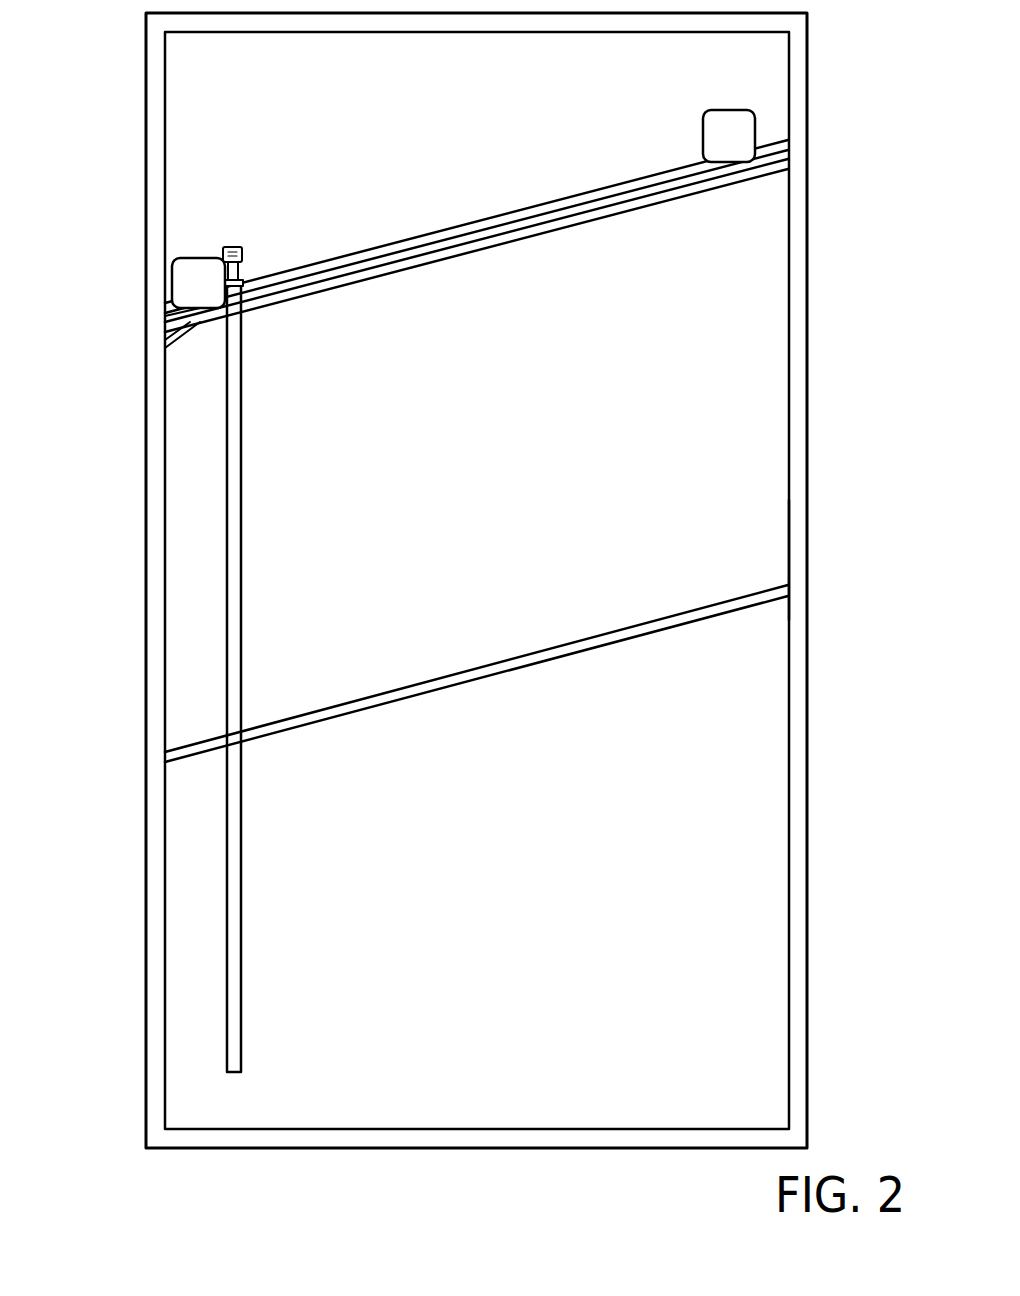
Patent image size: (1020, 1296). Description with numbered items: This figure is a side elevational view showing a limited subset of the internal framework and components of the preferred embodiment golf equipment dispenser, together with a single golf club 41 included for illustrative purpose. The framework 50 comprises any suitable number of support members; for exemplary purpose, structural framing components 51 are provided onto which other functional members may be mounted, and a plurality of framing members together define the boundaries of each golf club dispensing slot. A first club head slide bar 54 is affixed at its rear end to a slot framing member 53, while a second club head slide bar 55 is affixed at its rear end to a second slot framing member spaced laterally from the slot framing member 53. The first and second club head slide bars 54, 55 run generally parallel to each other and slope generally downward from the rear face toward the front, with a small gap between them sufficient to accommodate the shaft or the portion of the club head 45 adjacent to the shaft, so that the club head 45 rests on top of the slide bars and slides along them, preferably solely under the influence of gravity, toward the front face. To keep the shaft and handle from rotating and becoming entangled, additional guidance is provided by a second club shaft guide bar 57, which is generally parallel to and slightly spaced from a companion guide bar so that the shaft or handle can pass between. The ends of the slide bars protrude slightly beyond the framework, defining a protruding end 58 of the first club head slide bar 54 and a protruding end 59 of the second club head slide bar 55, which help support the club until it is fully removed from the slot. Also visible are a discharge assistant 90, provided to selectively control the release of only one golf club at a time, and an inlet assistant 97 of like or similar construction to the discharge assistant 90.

The golf club 41 is at (242, 910).
The club head 45 is at (242, 258).
The framework 50 is at (810, 557).
The structural framing components 51 is at (157, 897).
The slot framing member 53 is at (796, 215).
The first club head slide bar 54 is at (413, 266).
The second club head slide bar 55 is at (365, 260).
The second club shaft guide bar 57 is at (660, 632).
The protruding end of first club head slide bar 58 is at (182, 326).
The protruding end of second club head slide bar 59 is at (172, 316).
The discharge assistant 90 is at (186, 278).
The inlet assistant 97 is at (742, 131).